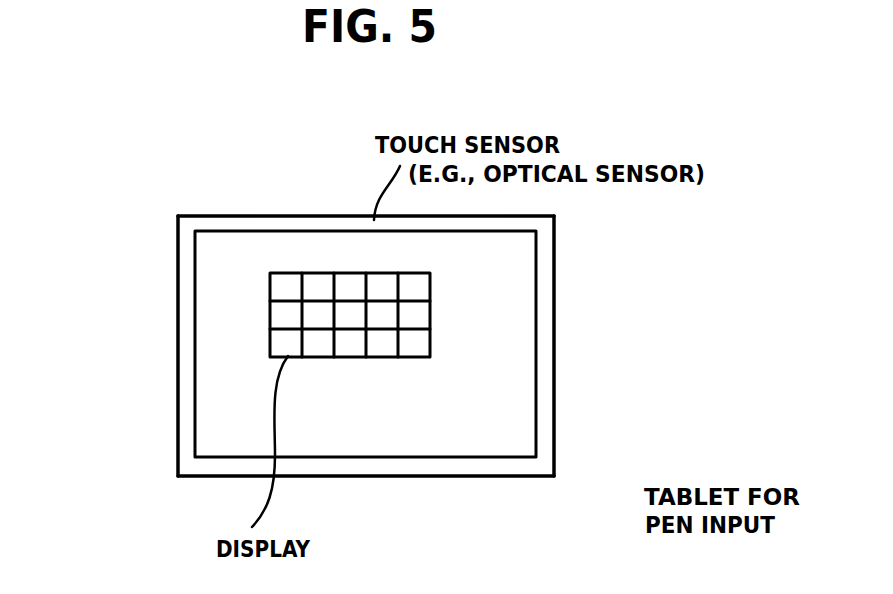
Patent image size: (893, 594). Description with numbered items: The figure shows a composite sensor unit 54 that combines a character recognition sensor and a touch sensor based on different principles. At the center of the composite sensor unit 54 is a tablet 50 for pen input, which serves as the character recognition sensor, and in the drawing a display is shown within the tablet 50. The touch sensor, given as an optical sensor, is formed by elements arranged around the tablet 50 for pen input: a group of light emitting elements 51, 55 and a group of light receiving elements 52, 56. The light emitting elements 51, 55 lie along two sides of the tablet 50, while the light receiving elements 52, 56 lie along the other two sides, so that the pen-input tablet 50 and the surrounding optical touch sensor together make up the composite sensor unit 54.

The tablet 50 is at (520, 445).
The light emitting elements 51 is at (251, 216).
The light receiving elements 52 is at (447, 470).
The composite sensor unit 54 is at (350, 332).
The light emitting elements 55 is at (181, 280).
The light receiving elements 56 is at (547, 364).